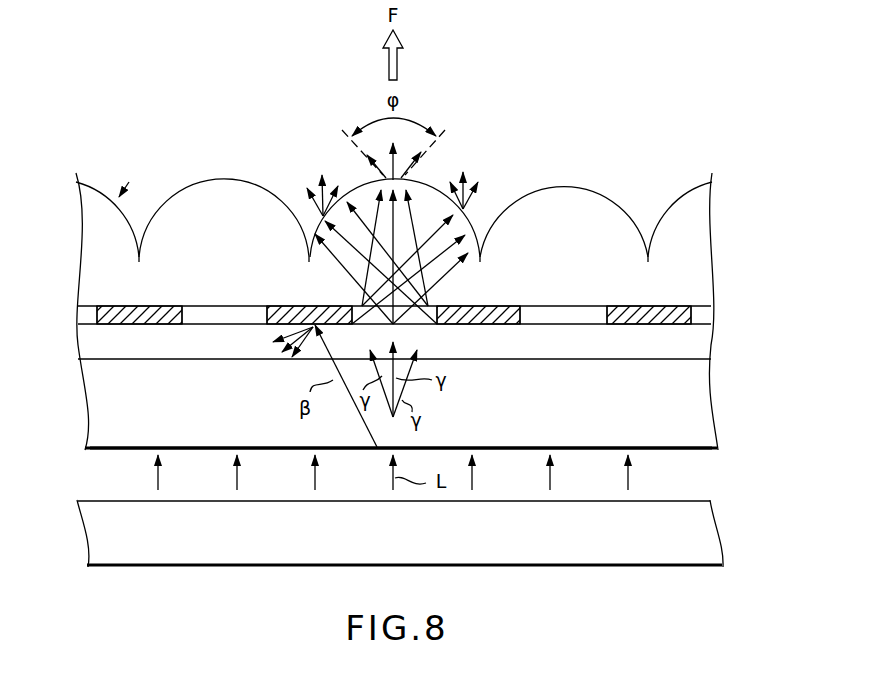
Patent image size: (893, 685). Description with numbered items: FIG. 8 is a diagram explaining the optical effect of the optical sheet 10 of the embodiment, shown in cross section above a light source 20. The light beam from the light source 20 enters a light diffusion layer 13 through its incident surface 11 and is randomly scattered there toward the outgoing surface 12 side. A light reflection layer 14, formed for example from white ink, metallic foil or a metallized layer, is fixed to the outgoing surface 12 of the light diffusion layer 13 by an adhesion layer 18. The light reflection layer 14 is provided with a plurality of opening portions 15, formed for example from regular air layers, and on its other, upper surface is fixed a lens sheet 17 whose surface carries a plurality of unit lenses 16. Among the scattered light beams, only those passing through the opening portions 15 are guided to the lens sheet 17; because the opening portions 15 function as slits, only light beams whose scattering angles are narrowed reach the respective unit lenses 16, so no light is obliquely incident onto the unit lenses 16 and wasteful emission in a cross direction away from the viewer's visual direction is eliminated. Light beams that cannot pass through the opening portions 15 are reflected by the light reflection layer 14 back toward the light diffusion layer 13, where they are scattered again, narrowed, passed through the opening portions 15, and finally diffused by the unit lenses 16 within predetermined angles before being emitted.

The optical sheet 10 is at (573, 150).
The incident surface 11 is at (700, 452).
The outgoing surface 12 is at (85, 328).
The light diffusion layer 13 is at (707, 420).
The light reflection layer 14 is at (122, 306).
The opening portions 15 is at (374, 316).
The unit lenses 16 is at (240, 176).
The lens sheet 17 is at (420, 285).
The adhesion layer 18 is at (670, 346).
The light source 20 is at (707, 547).